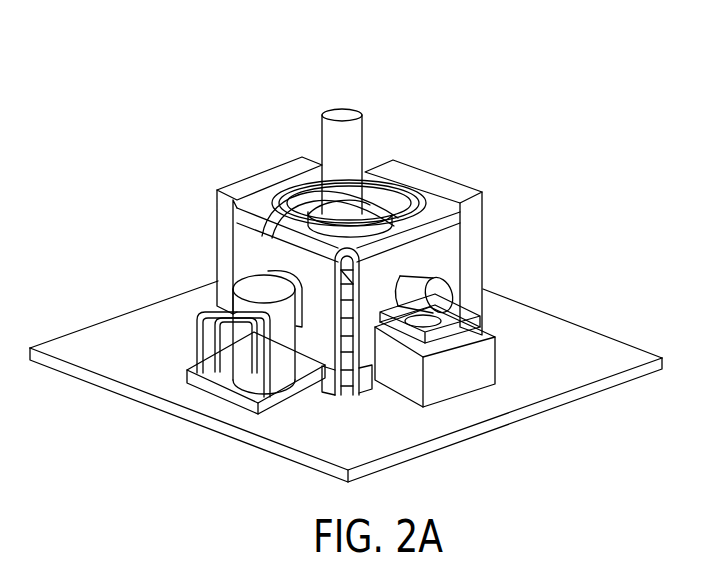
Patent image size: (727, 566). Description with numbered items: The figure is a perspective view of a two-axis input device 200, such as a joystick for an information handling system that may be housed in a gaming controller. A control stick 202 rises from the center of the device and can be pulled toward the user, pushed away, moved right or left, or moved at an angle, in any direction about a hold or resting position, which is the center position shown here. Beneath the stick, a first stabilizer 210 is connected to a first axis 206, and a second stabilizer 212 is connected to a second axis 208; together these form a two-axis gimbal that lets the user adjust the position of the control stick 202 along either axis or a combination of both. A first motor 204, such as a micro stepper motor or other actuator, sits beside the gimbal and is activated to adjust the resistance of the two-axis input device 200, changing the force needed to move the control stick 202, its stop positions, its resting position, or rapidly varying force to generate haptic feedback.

The two-axis input device 200 is at (532, 92).
The control stick 202 is at (343, 104).
The first motor 204 is at (222, 300).
The first axis 206 is at (440, 290).
The second axis 208 is at (383, 200).
The first stabilizer 210 is at (262, 185).
The second stabilizer 212 is at (455, 192).